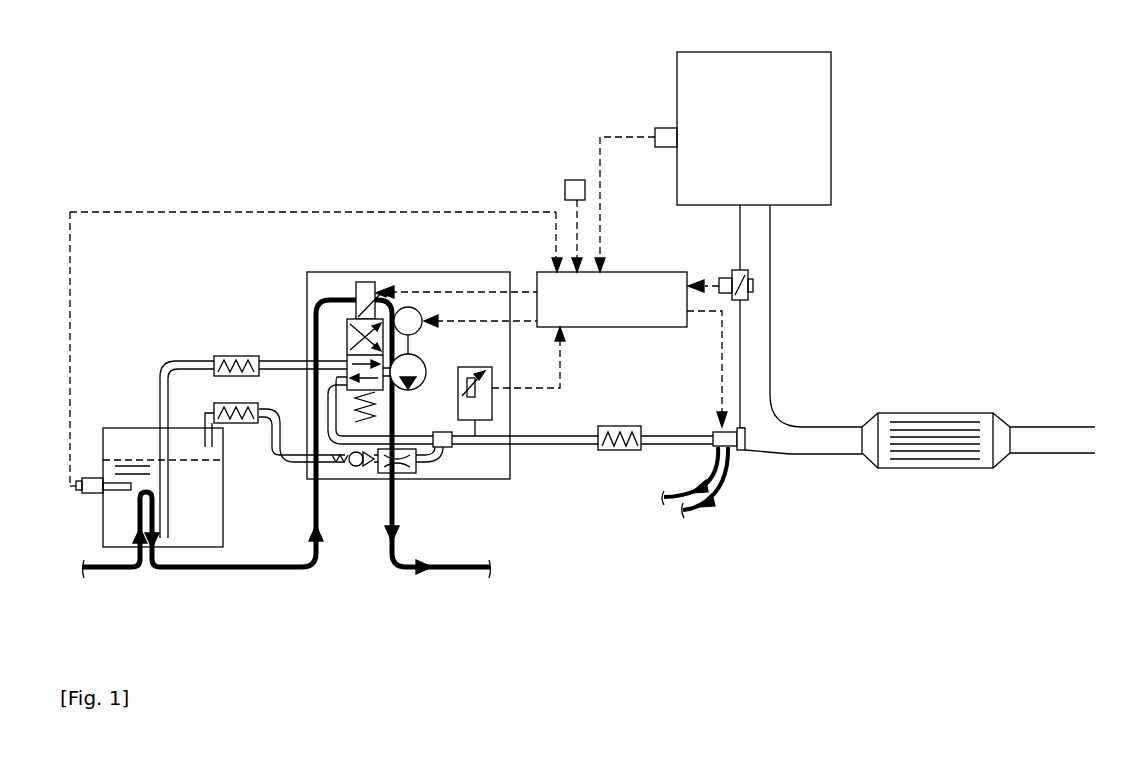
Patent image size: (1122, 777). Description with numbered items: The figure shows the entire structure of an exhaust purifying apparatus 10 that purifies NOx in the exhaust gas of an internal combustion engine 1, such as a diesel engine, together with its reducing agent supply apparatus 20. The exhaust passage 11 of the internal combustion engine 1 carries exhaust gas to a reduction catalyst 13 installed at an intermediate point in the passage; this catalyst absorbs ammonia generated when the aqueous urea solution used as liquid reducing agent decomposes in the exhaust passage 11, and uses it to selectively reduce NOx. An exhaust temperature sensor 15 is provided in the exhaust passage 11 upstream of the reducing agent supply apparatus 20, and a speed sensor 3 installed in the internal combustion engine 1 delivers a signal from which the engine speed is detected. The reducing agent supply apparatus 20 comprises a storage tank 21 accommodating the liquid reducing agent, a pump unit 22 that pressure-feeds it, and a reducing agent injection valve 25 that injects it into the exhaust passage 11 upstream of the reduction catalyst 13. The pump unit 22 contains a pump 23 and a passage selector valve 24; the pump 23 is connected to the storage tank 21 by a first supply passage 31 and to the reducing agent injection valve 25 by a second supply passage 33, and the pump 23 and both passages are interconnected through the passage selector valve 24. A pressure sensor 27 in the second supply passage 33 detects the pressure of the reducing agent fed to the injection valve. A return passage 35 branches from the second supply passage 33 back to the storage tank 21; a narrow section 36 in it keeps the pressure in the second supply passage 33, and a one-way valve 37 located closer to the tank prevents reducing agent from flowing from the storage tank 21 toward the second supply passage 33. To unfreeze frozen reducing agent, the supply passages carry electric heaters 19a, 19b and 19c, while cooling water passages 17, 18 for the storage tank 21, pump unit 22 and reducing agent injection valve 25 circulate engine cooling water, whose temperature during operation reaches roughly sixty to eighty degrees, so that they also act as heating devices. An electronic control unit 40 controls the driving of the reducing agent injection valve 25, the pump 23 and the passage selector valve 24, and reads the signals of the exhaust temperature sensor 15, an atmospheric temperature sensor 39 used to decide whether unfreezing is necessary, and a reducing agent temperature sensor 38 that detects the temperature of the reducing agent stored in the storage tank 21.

The internal combustion engine 1 is at (831, 78).
The speed sensor 3 is at (667, 128).
The exhaust purifying apparatus 10 is at (918, 210).
The exhaust passage 11 is at (771, 344).
The reduction catalyst 13 is at (938, 413).
The exhaust temperature sensor 15 is at (727, 278).
The cooling water passage 17 is at (258, 568).
The cooling water passage 18 is at (703, 506).
The electric heater 19a is at (238, 356).
The electric heater 19b is at (240, 423).
The heater 19c is at (620, 426).
The reducing agent supply apparatus 20 is at (282, 190).
The storage tank 21 is at (226, 521).
The pump unit 22 is at (340, 272).
The pump 23 is at (422, 368).
The passage selector valve 24 is at (347, 344).
The reducing agent injection valve 25 is at (716, 432).
The pressure sensor 27 is at (492, 402).
The first supply passage 31 is at (199, 361).
The second supply passage 33 is at (560, 445).
The return passage 35 is at (286, 463).
The narrow section 36 is at (396, 474).
The one-way valve 37 is at (356, 467).
The reducing agent temperature sensor 38 is at (88, 494).
The atmospheric temperature sensor 39 is at (570, 180).
The electronic control unit 40 is at (648, 272).